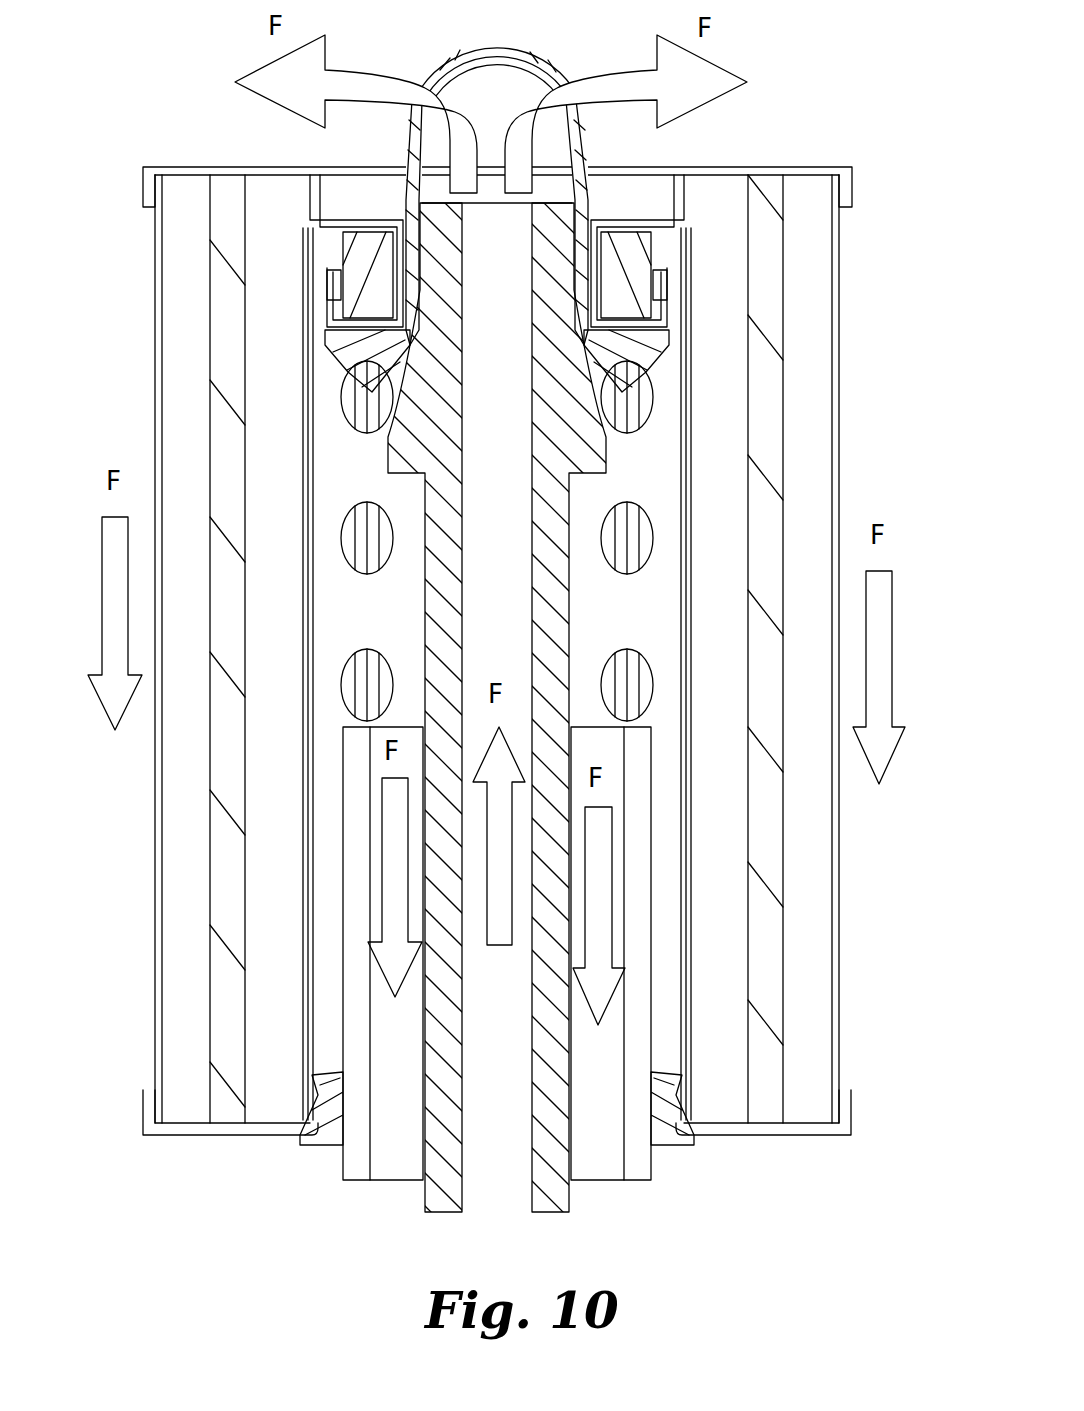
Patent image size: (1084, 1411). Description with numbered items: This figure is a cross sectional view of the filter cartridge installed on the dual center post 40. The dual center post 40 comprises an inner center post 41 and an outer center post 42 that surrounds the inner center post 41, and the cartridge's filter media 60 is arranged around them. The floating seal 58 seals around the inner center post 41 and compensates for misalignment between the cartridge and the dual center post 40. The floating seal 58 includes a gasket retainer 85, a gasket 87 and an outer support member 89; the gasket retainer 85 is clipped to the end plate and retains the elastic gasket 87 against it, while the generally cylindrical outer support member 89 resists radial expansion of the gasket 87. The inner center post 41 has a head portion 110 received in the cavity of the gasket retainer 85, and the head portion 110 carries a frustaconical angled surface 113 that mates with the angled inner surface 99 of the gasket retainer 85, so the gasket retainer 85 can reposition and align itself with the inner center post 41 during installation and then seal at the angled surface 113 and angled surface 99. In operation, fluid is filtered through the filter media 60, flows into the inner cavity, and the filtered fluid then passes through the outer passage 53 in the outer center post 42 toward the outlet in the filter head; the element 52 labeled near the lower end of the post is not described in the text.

The dual center post 40 is at (694, 734).
The inner center post 41 is at (555, 590).
The outer center post 42 is at (637, 953).
The central tube bottom end 52 is at (505, 1188).
The outer passage 53 is at (612, 1140).
The floating seal 58 is at (640, 252).
The filter media 60 is at (773, 875).
The gasket retainer 85 is at (355, 345).
The gasket 87 is at (630, 278).
The outer support member 89 is at (663, 303).
The inner surface 99 is at (645, 362).
The head portion 110 is at (437, 268).
The angled surface 113 is at (605, 425).